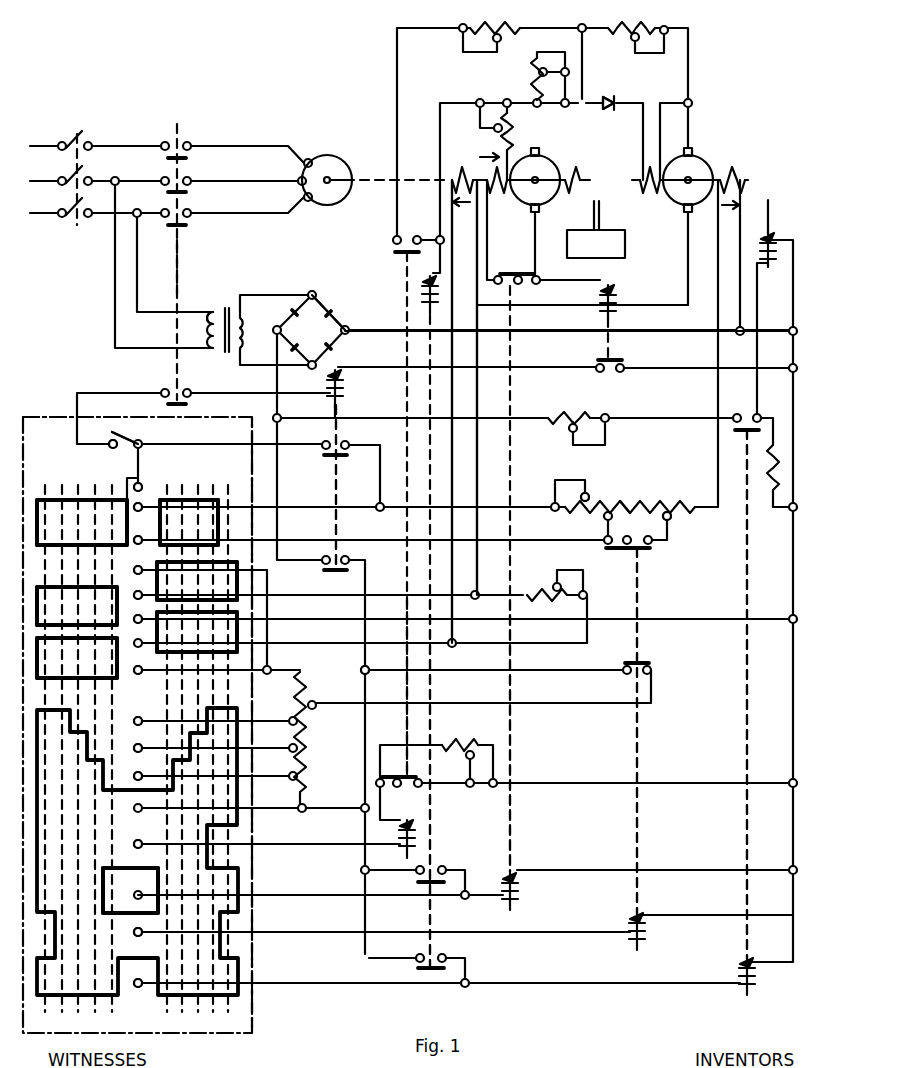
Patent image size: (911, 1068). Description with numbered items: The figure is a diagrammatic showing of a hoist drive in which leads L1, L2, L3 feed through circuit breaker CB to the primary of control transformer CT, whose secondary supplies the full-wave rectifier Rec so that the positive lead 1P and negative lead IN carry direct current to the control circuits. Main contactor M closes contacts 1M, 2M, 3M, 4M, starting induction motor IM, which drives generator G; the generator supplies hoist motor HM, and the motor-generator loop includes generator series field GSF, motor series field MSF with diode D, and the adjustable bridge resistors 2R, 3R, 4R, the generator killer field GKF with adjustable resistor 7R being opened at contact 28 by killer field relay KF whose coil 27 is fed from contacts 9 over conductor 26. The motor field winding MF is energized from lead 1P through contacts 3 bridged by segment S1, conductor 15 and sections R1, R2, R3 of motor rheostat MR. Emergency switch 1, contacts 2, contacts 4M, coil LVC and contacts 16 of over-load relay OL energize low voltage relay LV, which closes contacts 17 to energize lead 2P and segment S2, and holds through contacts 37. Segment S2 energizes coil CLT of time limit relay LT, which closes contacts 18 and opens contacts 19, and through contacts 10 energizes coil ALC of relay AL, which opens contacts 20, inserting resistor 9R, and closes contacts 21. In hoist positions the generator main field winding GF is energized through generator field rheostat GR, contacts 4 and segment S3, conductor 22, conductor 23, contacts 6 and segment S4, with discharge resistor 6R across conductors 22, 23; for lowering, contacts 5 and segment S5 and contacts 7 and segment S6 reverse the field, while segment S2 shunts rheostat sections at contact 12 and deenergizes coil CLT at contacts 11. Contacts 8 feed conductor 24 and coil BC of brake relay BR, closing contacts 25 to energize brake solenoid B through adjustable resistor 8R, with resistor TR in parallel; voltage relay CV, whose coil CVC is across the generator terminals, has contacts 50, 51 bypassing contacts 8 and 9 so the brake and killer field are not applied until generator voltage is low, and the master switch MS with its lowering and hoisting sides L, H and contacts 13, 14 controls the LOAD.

The circuit breaker CB is at (72, 141).
The lead L1 is at (46, 150).
The lead L2 is at (46, 185).
The lead L3 is at (46, 217).
The contact 1M is at (181, 140).
The contact 2M is at (181, 175).
The contact 3M is at (181, 207).
The contact 4M is at (181, 392).
The main contactor M is at (180, 262).
The induction motor IM is at (320, 162).
The control transformer CT is at (232, 302).
The full-wave rectifier Rec is at (326, 340).
The master switch MS is at (71, 399).
The resistor 2R is at (502, 20).
The resistor 3R is at (528, 76).
The resistor 4R is at (638, 20).
The adjustable resistor 7R is at (512, 142).
The generator main field winding GF is at (462, 168).
The generator killer field GKF is at (492, 195).
The generator G is at (542, 158).
The generator series field GSF is at (572, 194).
The load LOAD is at (596, 244).
The motor series field MSF is at (650, 194).
The hoist motor HM is at (699, 158).
The motor field winding MF is at (733, 170).
The diode D is at (611, 96).
The brake solenoid B is at (772, 265).
The contacts 21 is at (405, 236).
The contact 28 is at (502, 274).
The actuating coil CVC is at (425, 297).
The actuating coil LVC is at (345, 385).
The over-load relay OL is at (612, 352).
The contacts 16 is at (606, 374).
The negative lead IN is at (536, 333).
The adjustable resistor 8R is at (571, 410).
The contacts 25 is at (748, 413).
The resistor TR is at (768, 490).
The holding contacts 37 is at (338, 440).
The positive lead 1P is at (277, 484).
The low voltage relay LV is at (341, 483).
The conductor 23 is at (455, 452).
The conductor 22 is at (477, 486).
The motor rheostat MR is at (622, 493).
The rheostat section R1 is at (588, 515).
The rheostat section R2 is at (646, 498).
The rheostat section R3 is at (672, 516).
The contacts 18 is at (626, 536).
The conductor 15 is at (290, 540).
The contacts 17 is at (338, 556).
The resistor 6R is at (552, 584).
The lead 2P is at (362, 680).
The relay AL is at (405, 680).
The voltage sensitive relay CV is at (432, 696).
The contacts 19 is at (630, 676).
The resistor 9R is at (452, 735).
The killer field relay KF is at (514, 754).
The time limit relay LT is at (642, 754).
The brake relay BR is at (745, 752).
The generator field rheostat GR is at (312, 744).
The contacts 20 is at (402, 789).
The actuating coil ALC is at (420, 838).
The contacts 50 is at (430, 866).
The actuating coil 27 is at (522, 887).
The conductor 26 is at (308, 895).
The contacts 51 is at (432, 954).
The conductor 24 is at (308, 982).
The actuating coil CLT is at (650, 926).
The actuating coil BC is at (738, 968).
The lower position L is at (86, 470).
The hoist position H is at (202, 470).
The segment S1 is at (200, 490).
The segment S2 is at (240, 878).
The segment S3 is at (172, 562).
The segment S4 is at (158, 650).
The segment S5 is at (104, 680).
The segment S6 is at (72, 587).
The emergency switch 1 is at (132, 436).
The contacts 2 is at (144, 484).
The contacts 3 is at (132, 523).
The contacts 4 is at (140, 583).
The contacts 5 is at (140, 664).
The contacts 6 is at (138, 635).
The contacts 7 is at (140, 609).
The contacts 8 is at (132, 972).
The contacts 9 is at (136, 922).
The contacts 10 is at (138, 860).
The contacts 11 is at (134, 948).
The contact 12 is at (140, 787).
The switch contact 13 is at (128, 761).
The switch contact 14 is at (137, 730).